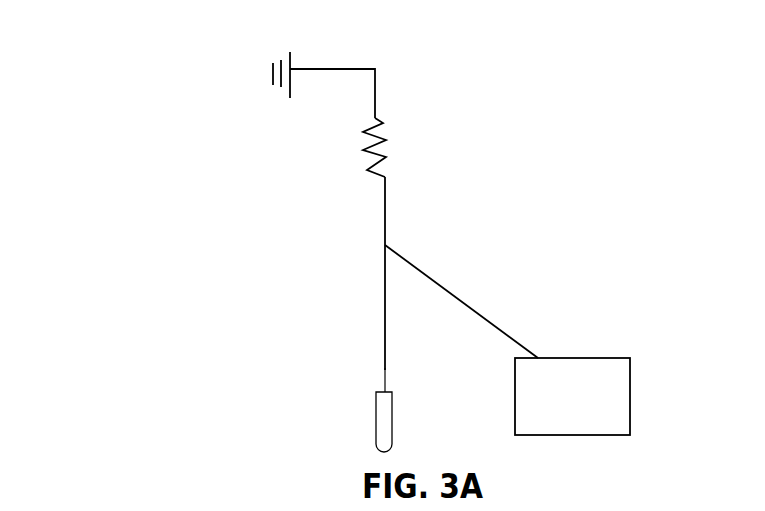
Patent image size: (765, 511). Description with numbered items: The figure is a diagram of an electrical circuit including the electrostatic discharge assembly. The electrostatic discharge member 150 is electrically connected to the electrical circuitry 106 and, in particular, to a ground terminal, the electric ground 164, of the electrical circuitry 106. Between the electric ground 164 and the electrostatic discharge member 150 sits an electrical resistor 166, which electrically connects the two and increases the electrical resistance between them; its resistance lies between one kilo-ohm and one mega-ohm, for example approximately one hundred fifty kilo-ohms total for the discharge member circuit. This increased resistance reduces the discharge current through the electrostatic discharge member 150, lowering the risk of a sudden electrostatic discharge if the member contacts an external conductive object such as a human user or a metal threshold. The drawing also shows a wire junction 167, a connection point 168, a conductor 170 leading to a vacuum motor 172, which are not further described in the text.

The electrical circuitry 106 is at (186, 95).
The electric ground 164 is at (290, 52).
The electrical resistor 166 is at (368, 171).
The conductive wire / junction 167 is at (358, 263).
The connection point 168 is at (385, 370).
The electrostatic discharge member 150 is at (377, 418).
The conductor line to vacuum motor 170 is at (467, 305).
The vacuum motor 172 is at (578, 363).